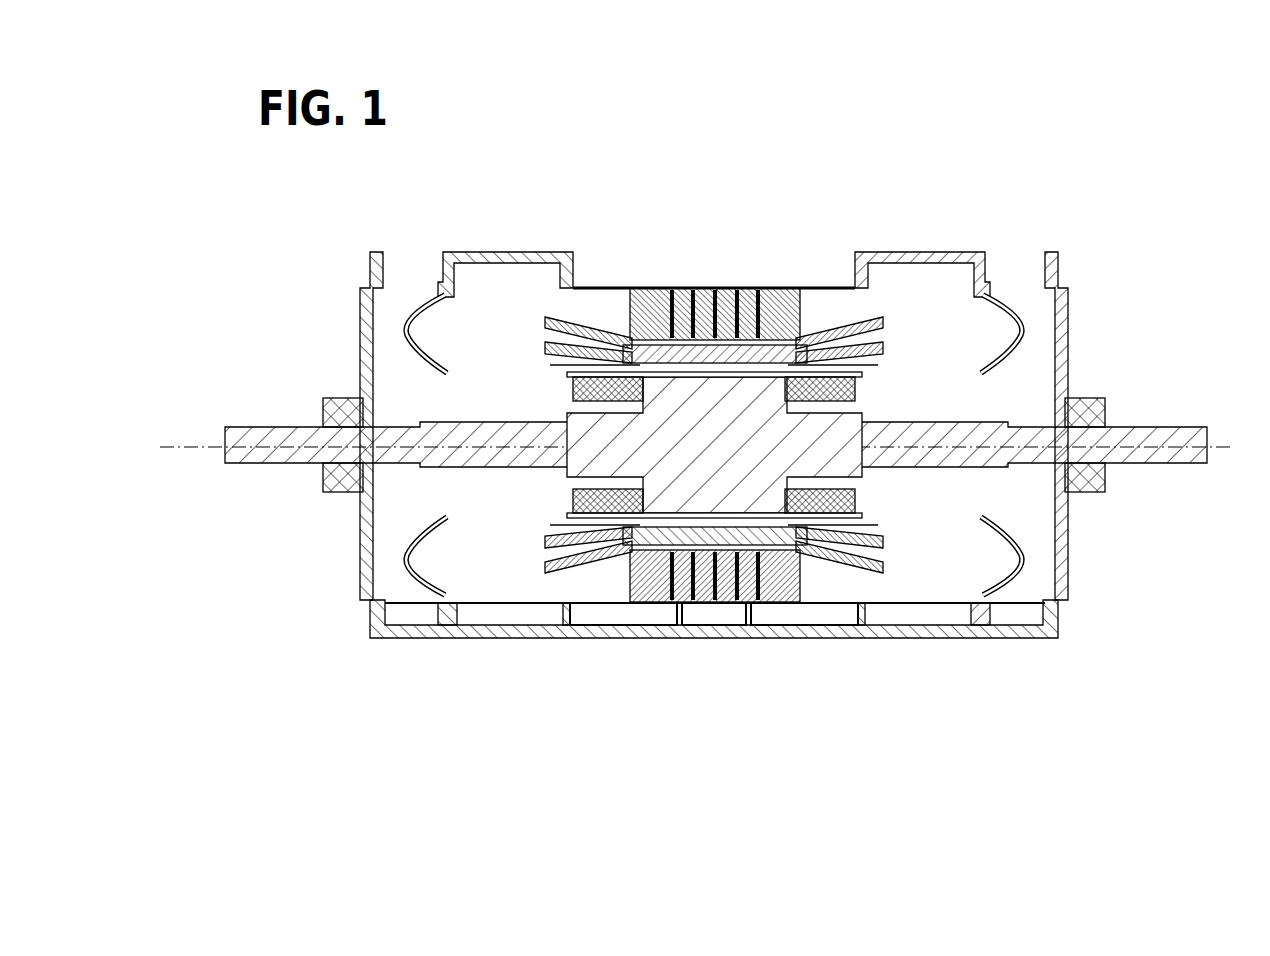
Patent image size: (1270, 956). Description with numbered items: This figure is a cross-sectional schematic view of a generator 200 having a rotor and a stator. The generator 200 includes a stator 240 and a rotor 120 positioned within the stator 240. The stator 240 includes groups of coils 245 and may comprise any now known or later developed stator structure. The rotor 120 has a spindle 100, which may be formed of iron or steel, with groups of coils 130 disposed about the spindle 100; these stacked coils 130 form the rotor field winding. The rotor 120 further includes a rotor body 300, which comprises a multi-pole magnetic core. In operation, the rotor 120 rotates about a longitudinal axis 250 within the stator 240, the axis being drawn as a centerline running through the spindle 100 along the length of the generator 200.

The spindle 100 is at (440, 468).
The rotor 120 is at (1005, 405).
The coils 130 is at (869, 390).
The generator 200 is at (620, 270).
The stator 240 is at (536, 338).
The coils 245 is at (555, 315).
The longitudinal axis 250 is at (190, 447).
The rotor body 300 is at (727, 452).